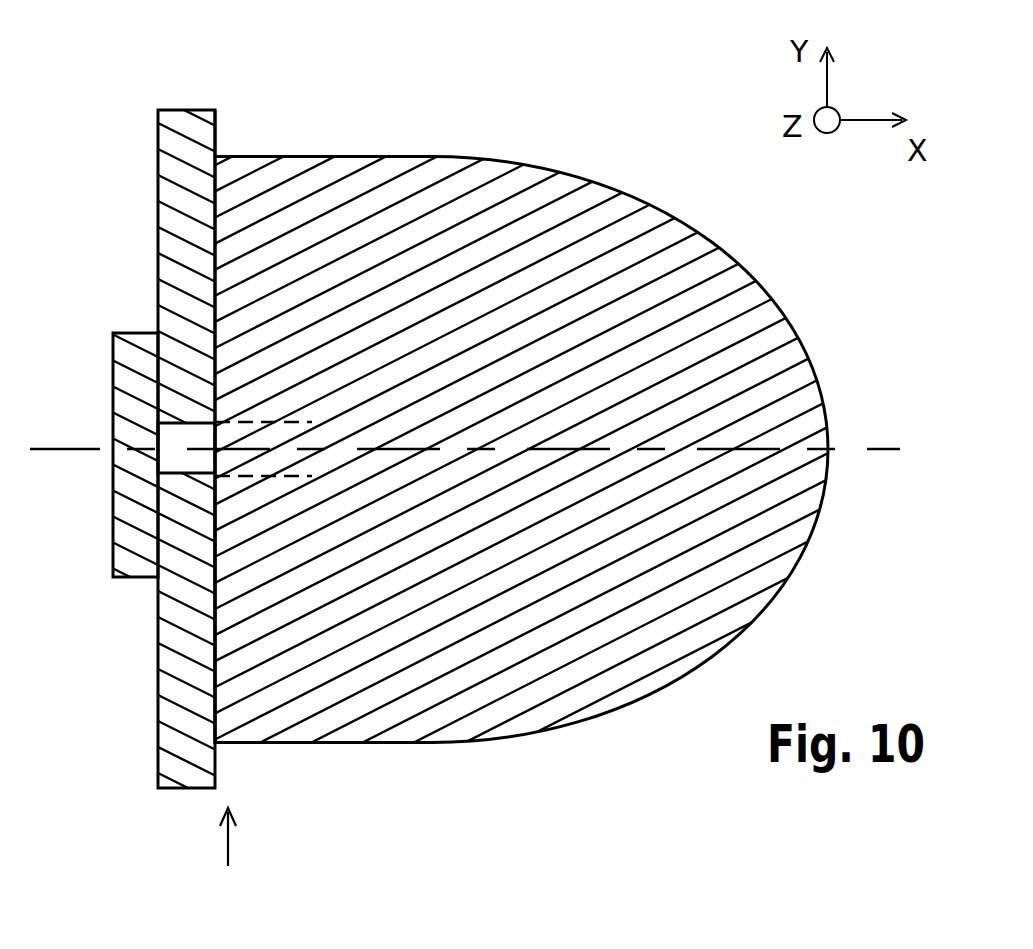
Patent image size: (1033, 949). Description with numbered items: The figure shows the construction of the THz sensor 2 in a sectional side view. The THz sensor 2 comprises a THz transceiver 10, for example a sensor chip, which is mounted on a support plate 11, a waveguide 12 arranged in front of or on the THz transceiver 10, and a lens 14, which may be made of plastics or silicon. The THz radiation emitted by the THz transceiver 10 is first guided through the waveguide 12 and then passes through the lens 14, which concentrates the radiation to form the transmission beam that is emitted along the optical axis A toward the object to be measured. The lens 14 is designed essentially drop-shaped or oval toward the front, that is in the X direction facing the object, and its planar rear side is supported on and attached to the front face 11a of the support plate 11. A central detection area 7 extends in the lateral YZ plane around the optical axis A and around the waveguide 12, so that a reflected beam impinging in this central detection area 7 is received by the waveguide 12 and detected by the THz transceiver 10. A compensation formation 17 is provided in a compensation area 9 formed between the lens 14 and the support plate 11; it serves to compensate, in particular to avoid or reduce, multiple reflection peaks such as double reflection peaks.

The THz sensor 2 is at (524, 796).
The lens 14 is at (590, 252).
The compensation area 9 is at (215, 662).
The central detection area 7 is at (265, 422).
The support plate 11 is at (197, 132).
The front face of the support plate 11a is at (237, 132).
The waveguide 12 is at (177, 420).
The THz transceiver 10 is at (113, 524).
The compensation formation 17 is at (226, 860).
The optical axis A is at (878, 452).